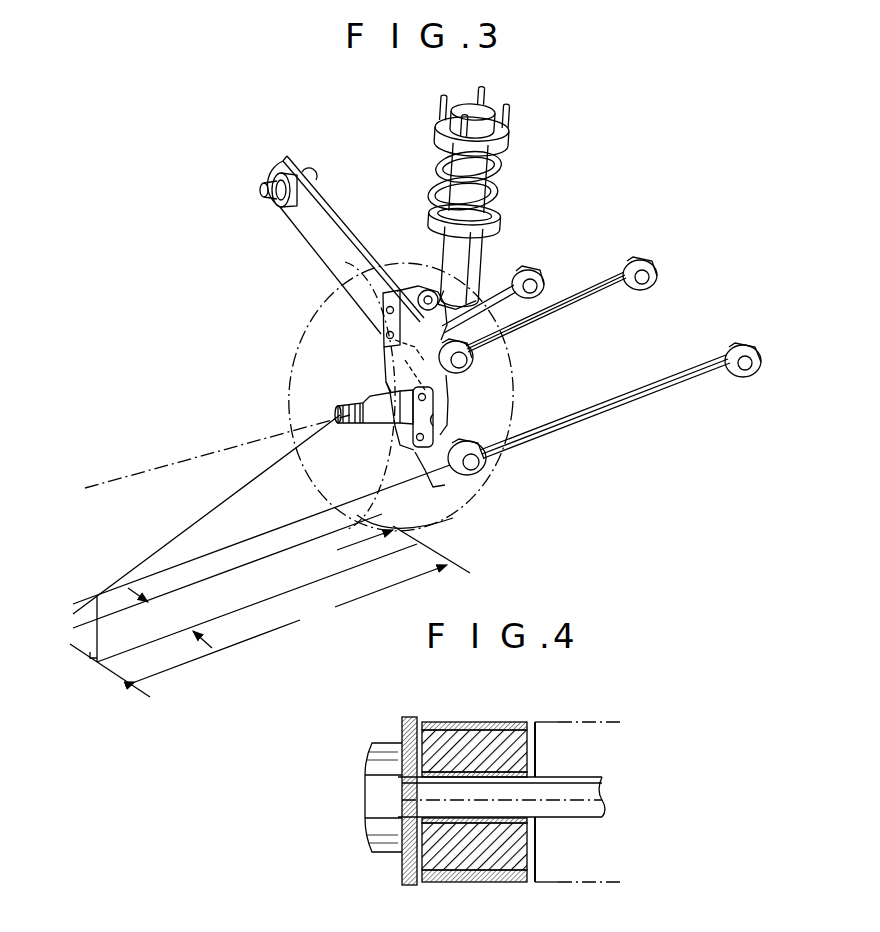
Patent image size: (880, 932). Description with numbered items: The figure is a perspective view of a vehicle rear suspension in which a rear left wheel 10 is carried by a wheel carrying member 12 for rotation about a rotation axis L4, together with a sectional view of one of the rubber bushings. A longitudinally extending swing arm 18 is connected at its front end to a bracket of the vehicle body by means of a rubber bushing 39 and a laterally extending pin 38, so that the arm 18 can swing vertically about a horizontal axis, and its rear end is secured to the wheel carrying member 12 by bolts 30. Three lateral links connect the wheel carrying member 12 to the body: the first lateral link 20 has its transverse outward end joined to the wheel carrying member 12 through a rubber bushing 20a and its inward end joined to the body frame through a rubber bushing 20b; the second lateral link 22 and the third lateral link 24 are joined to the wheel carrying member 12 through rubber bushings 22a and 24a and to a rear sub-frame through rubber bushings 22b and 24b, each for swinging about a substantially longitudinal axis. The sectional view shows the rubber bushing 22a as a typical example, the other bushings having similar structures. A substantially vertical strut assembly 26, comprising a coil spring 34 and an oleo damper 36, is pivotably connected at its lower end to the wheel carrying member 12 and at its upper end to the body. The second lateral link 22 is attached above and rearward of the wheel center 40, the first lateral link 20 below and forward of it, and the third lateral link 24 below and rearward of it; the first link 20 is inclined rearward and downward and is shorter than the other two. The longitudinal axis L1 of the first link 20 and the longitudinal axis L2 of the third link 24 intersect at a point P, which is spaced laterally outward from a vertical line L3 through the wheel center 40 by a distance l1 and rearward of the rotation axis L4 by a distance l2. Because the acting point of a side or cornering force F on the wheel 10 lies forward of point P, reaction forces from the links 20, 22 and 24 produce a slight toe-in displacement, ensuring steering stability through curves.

In FIG. 3, the rear left wheel 10 is at (318, 485).
In FIG. 3, the wheel carrying member 12 is at (393, 425).
In FIG. 4, the wheel carrying member 12 is at (592, 730).
In FIG. 3, the swing arm 18 is at (333, 231).
In FIG. 3, the first lateral link 20 is at (500, 293).
In FIG. 3, the rubber bushing 20a is at (380, 377).
In FIG. 3, the rubber bushing 20b is at (535, 268).
In FIG. 3, the second lateral link 22 is at (600, 297).
In FIG. 4, the second lateral link 22 is at (513, 720).
In FIG. 3, the rubber bushing 22a is at (440, 387).
In FIG. 4, the rubber bushing 22a is at (460, 740).
In FIG. 3, the rubber bushing 22b is at (653, 262).
In FIG. 3, the third lateral link 24 is at (680, 390).
In FIG. 3, the rubber bushing 24a is at (457, 477).
In FIG. 3, the rubber bushing 24b is at (735, 340).
In FIG. 3, the strut assembly 26 is at (507, 200).
In FIG. 3, the bolts 30 is at (382, 340).
In FIG. 3, the coil spring 34 is at (500, 160).
In FIG. 3, the oleo damper 36 is at (457, 238).
In FIG. 3, the pin 38 is at (264, 203).
In FIG. 3, the rubber bushing 39 is at (270, 172).
In FIG. 3, the wheel center 40 is at (380, 427).
In FIG. 3, the longitudinal axis of first lateral link L1 is at (198, 517).
In FIG. 3, the longitudinal axis of third lateral link L2 is at (273, 532).
In FIG. 3, the vertical line L3 is at (390, 483).
In FIG. 3, the rotation axis L4 is at (180, 460).
In FIG. 3, the point of intersection P is at (98, 592).
In FIG. 3, the side force F is at (360, 542).
In FIG. 3, the distance l1 is at (291, 623).
In FIG. 3, the distance l2 is at (170, 618).